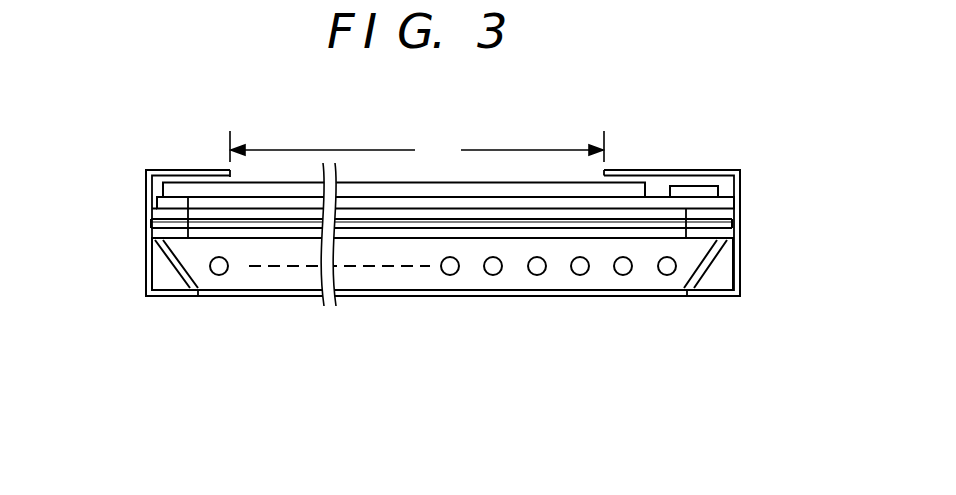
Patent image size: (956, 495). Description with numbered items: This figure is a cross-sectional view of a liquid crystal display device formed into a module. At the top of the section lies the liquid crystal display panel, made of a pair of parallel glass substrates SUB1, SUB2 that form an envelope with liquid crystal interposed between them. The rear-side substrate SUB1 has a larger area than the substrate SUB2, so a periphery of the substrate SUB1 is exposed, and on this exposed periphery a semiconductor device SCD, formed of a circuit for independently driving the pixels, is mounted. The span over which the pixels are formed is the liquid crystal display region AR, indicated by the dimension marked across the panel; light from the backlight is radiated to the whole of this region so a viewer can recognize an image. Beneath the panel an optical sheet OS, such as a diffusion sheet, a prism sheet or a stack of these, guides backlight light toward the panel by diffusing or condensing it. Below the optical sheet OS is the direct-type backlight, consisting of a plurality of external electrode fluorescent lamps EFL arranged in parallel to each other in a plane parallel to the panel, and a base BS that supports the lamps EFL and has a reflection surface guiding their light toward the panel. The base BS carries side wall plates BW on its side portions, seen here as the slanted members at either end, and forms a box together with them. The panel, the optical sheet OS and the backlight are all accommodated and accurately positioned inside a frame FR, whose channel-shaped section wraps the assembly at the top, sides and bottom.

The frame FR is at (739, 191).
The substrate SUB1 is at (177, 202).
The substrate SUB2 is at (183, 191).
The semiconductor device SCD is at (692, 188).
The liquid crystal display region AR is at (417, 147).
The optical sheet OS is at (280, 229).
The base BS is at (634, 292).
The side wall plates BW is at (183, 255).
The external electrode fluorescent lamps EFL is at (492, 277).